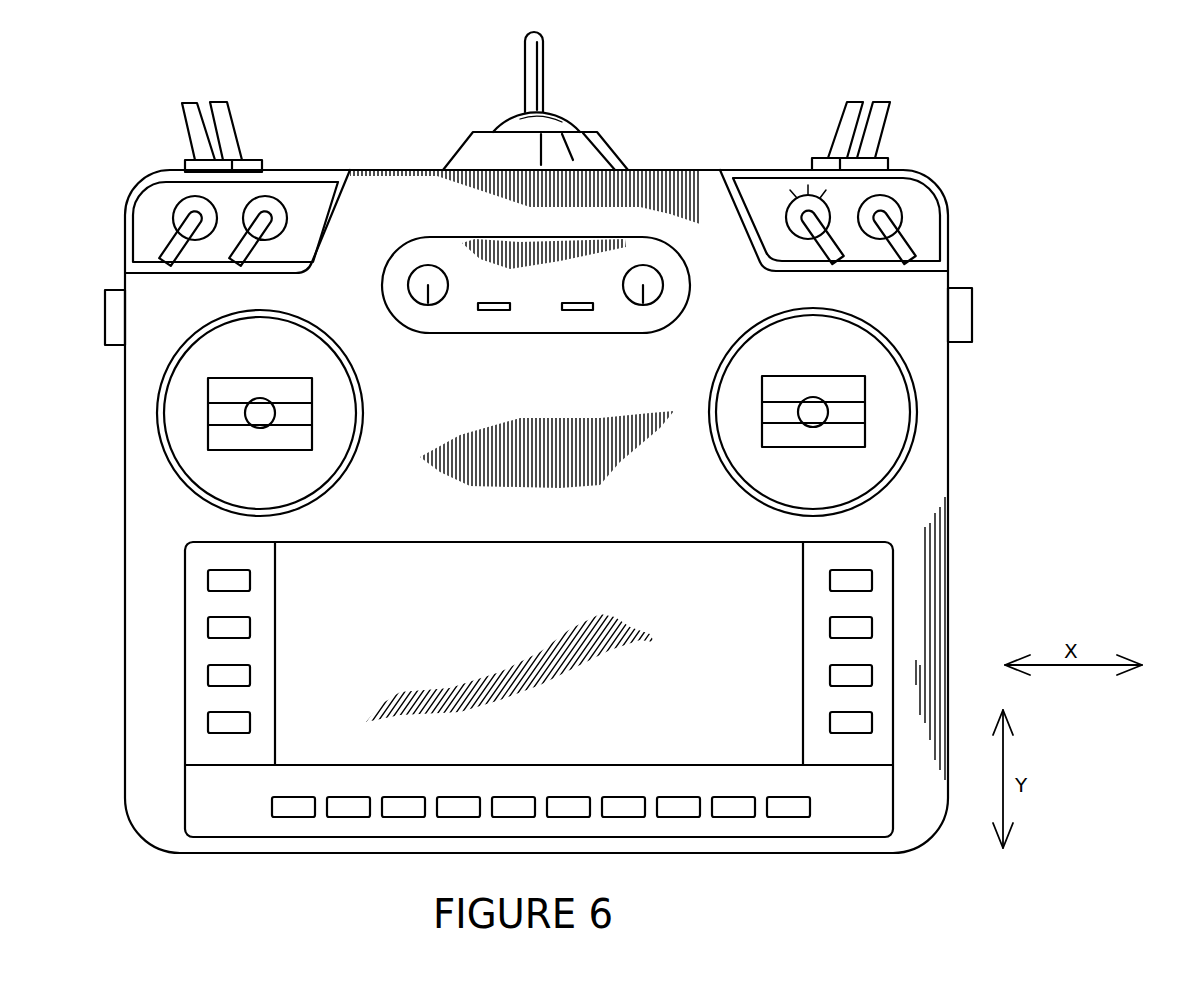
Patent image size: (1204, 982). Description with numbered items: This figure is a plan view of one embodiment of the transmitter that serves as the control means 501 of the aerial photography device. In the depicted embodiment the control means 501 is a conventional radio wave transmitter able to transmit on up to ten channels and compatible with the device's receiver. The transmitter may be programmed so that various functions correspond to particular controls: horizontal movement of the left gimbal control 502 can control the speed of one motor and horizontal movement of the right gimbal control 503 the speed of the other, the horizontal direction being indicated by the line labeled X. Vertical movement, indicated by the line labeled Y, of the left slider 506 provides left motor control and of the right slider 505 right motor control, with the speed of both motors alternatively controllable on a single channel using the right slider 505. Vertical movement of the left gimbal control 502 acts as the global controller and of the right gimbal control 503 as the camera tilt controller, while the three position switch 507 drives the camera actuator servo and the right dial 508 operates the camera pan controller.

The control means 501 is at (1040, 396).
The left gimbal control 502 is at (262, 412).
The right gimbal control 503 is at (818, 418).
The right slider 505 is at (972, 300).
The left slider 506 is at (107, 290).
The three position switch 507 is at (810, 213).
The right dial 508 is at (657, 281).